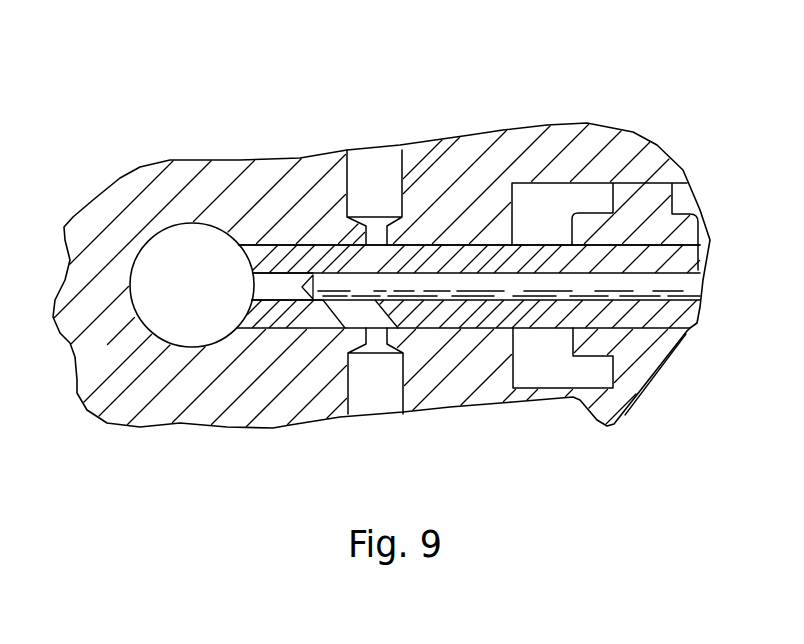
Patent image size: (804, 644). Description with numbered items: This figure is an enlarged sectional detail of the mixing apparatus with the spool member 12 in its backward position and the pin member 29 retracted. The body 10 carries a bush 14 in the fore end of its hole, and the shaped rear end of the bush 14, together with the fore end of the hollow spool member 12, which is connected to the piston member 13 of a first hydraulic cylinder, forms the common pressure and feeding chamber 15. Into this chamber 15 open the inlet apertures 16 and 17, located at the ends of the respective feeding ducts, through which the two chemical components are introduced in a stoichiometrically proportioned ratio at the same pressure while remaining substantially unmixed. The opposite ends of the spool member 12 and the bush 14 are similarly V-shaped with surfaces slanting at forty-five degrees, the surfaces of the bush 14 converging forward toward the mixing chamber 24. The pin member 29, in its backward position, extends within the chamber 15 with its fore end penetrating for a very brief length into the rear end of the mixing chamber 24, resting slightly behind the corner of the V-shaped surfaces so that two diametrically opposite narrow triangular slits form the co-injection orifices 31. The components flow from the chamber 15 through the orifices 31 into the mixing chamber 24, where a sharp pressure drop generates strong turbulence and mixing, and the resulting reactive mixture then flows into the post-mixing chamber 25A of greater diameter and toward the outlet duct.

The body 10 is at (123, 200).
The post-mixing chamber 25A is at (192, 287).
The common pressure and feeding chamber 15 is at (340, 260).
The inlet aperture 17 is at (373, 233).
The spool member 12 is at (443, 257).
The piston member 13 is at (632, 215).
The bush 14 is at (256, 330).
The mixing chamber 24 is at (283, 290).
The co-injection orifices 31 is at (306, 293).
The inlet aperture 16 is at (373, 333).
The pin member 29 is at (492, 290).